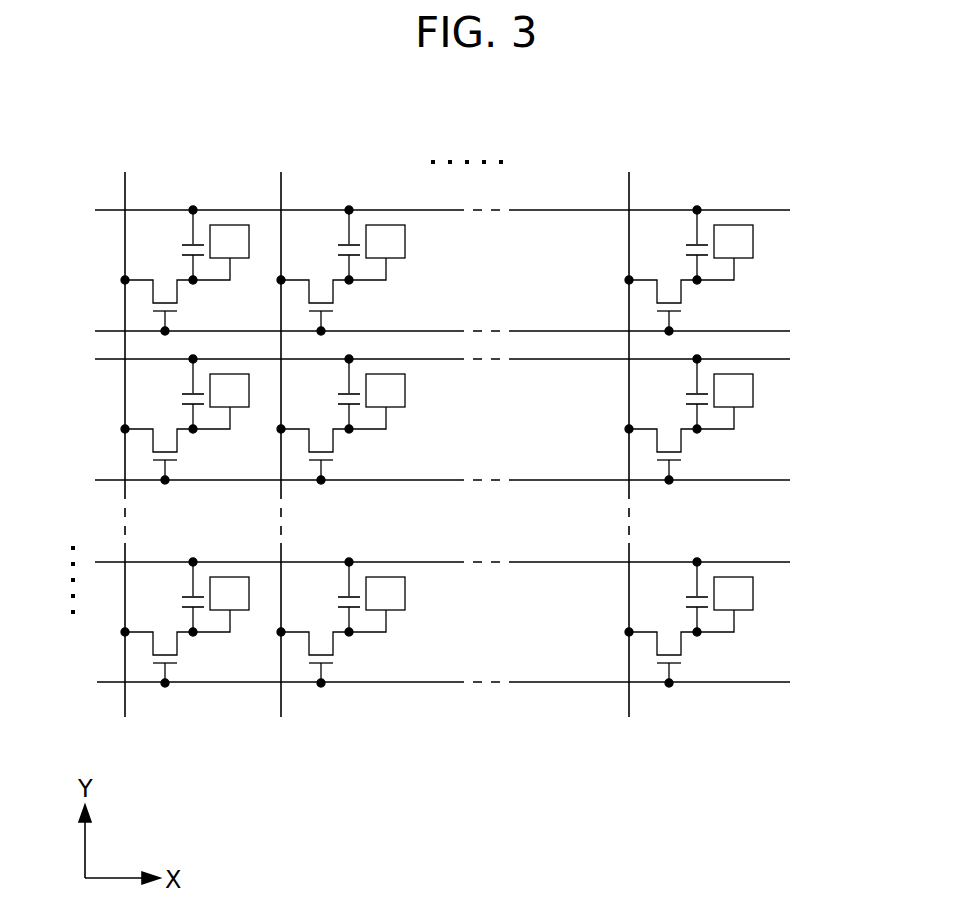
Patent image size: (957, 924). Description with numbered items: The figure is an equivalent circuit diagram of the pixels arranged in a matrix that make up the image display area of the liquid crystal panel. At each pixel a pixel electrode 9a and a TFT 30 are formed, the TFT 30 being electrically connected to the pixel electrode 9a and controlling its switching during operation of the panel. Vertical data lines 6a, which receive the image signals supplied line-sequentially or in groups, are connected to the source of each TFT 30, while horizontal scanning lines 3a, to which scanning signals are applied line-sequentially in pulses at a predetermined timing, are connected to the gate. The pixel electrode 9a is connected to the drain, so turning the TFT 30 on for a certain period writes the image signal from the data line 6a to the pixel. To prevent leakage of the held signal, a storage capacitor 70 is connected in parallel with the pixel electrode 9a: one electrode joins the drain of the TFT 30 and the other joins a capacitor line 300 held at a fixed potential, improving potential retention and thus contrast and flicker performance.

The data line 6a is at (125, 189).
The capacitor line 300 is at (777, 212).
The scanning line 3a is at (777, 332).
The storage capacitor 70 is at (438, 446).
The TFT 30 is at (438, 446).
The pixel electrode 9a is at (750, 248).